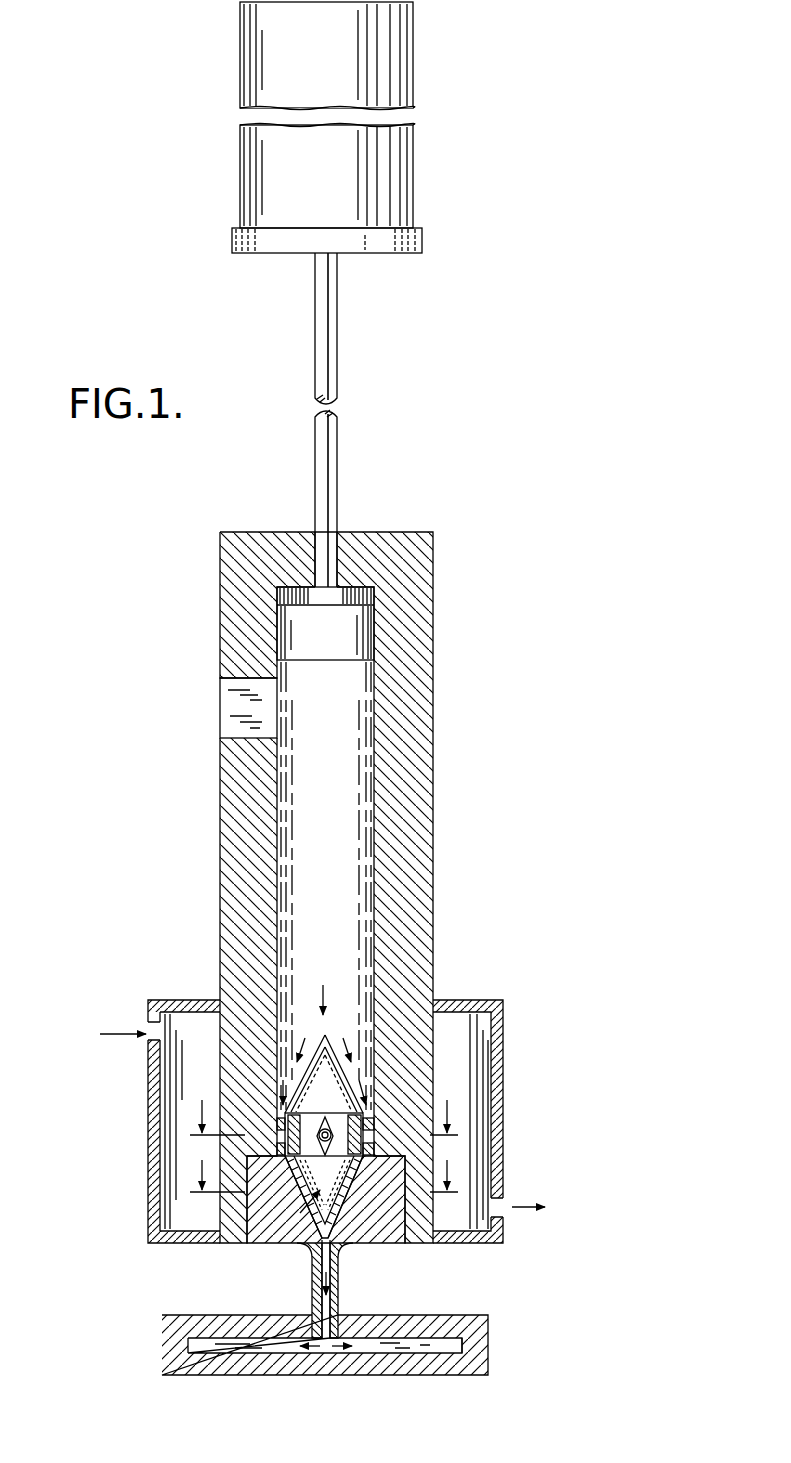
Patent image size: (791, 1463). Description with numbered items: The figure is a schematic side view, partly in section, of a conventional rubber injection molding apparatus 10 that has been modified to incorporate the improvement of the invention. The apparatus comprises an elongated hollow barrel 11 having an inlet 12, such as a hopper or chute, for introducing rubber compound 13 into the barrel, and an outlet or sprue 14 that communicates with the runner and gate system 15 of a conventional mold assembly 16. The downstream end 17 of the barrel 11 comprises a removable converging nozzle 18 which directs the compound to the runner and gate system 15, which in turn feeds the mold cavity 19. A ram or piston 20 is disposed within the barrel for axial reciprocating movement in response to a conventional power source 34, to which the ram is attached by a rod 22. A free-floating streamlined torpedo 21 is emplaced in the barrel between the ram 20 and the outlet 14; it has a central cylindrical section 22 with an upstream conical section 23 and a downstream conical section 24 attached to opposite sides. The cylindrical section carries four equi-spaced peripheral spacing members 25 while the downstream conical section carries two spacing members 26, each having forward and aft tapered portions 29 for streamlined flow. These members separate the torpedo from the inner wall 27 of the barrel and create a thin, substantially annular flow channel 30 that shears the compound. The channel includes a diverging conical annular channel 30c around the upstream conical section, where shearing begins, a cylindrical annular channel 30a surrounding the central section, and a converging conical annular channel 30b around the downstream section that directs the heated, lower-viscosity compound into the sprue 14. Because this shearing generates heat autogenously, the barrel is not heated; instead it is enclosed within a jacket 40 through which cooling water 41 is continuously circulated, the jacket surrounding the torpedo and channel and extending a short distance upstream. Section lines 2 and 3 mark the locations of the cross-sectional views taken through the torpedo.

The injection molding apparatus 10 is at (378, 887).
The barrel 11 is at (437, 770).
The inlet 12 is at (228, 731).
The rubber compound 13 is at (207, 703).
The outlet or sprue 14 is at (321, 1262).
The runner and gate system 15 is at (331, 1333).
The mold assembly 16 is at (160, 1337).
The downstream end of barrel 17 is at (440, 1215).
The converging nozzle 18 is at (397, 1247).
The mold cavity 19 is at (443, 1338).
The ram or piston 20 is at (331, 650).
The torpedo 21 is at (290, 1143).
The rod / central cylindrical section 22 is at (330, 366).
The upstream conical section 23 is at (326, 1036).
The downstream conical section 24 is at (343, 1186).
The peripheral spacing members 25 is at (324, 1134).
The peripheral spacing members 26 is at (302, 1183).
The inner wall of barrel 27 is at (372, 1122).
The tapered portions 29 is at (330, 1120).
The annular flow channel 30 is at (280, 1163).
The cylindrical annular channel 30a is at (373, 1114).
The converging conical annular channel 30b is at (333, 1228).
The diverging conical annular channel 30c is at (292, 1077).
The power source 34 is at (403, 163).
The jacket 40 is at (145, 1139).
The cooling water 41 is at (317, 1136).
The section line 2 is at (323, 1119).
The section line 3 is at (323, 1178).